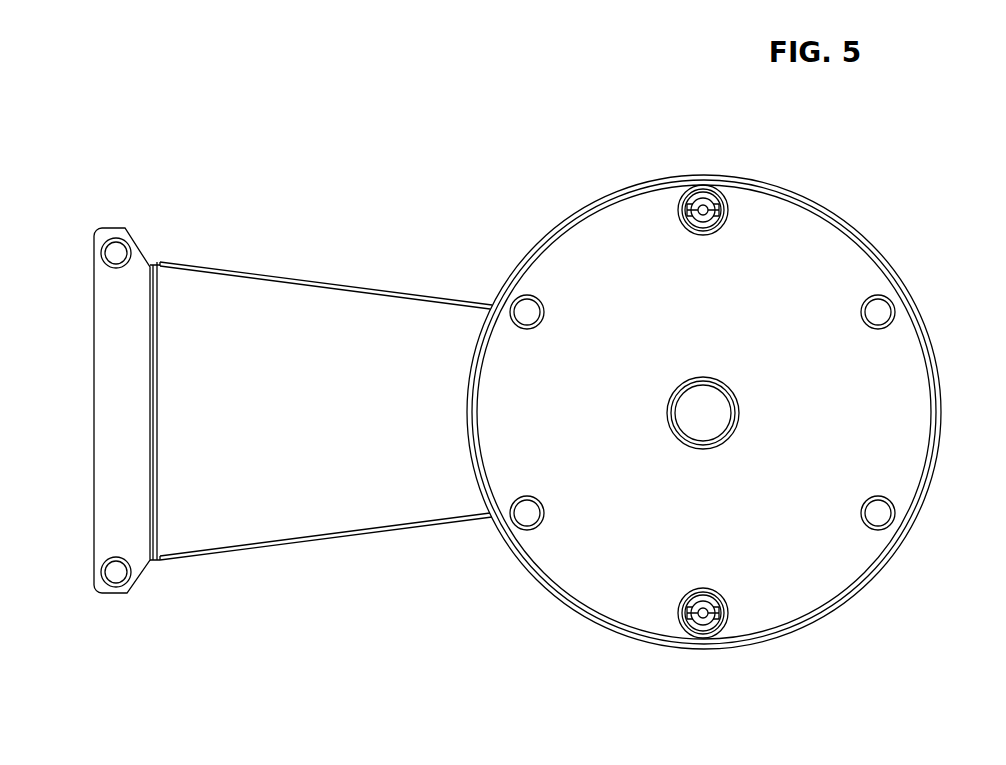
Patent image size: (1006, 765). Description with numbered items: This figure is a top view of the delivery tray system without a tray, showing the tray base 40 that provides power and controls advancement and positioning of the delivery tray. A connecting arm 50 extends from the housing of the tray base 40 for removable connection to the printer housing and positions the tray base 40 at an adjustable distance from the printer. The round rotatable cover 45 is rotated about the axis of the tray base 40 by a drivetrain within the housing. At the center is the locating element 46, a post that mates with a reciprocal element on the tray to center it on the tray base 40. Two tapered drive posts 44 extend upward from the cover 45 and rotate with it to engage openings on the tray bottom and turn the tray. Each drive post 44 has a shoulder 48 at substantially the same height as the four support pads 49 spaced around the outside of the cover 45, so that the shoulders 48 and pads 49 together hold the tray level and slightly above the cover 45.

The tray base 40 is at (454, 150).
The drive posts 44 is at (706, 200).
The rotatable cover 45 is at (594, 230).
The locating element 46 is at (679, 384).
The shoulder 48 is at (718, 227).
The support pads 49 is at (516, 300).
The connecting arm 50 is at (374, 300).